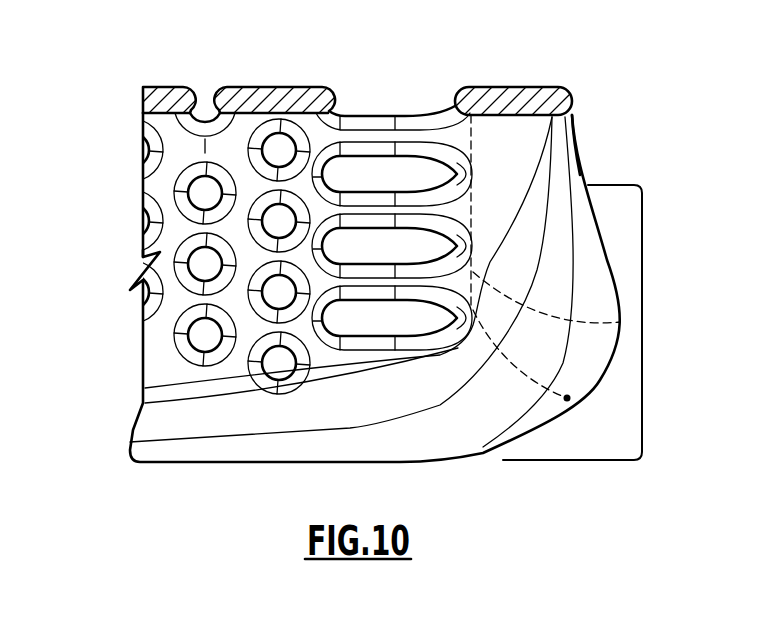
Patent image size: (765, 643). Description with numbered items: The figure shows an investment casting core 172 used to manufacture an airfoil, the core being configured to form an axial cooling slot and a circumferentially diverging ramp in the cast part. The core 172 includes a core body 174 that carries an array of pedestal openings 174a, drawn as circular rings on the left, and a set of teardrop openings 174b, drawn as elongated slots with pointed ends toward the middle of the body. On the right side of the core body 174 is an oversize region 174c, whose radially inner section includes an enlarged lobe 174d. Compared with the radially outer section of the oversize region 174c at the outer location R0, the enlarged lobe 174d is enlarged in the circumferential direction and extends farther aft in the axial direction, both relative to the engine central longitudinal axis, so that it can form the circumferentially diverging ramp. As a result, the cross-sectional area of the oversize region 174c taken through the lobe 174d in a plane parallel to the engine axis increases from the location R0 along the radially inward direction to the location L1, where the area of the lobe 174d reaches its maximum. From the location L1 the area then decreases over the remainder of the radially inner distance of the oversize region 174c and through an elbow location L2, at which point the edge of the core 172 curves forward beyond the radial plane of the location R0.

The investment core 172 is at (118, 327).
The core body 174 is at (325, 360).
The pedestal openings 174a is at (268, 142).
The teardrop openings 174b is at (358, 160).
The oversize region 174c is at (524, 375).
The enlarged lobe 174d is at (642, 326).
The location RO R0 is at (558, 118).
The location L1 is at (546, 318).
The elbow location L2 is at (567, 398).